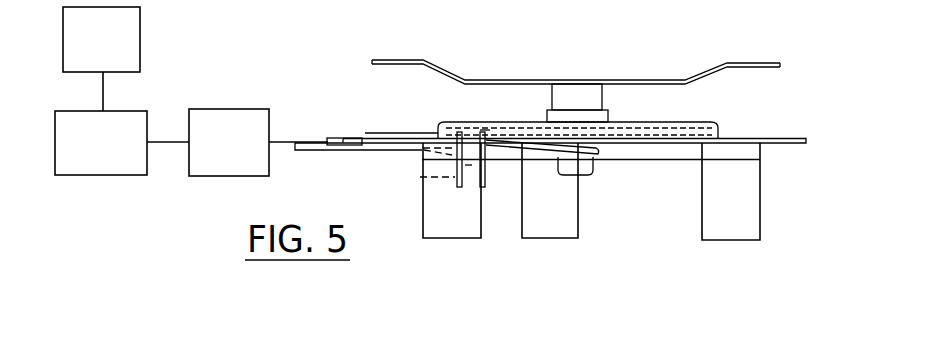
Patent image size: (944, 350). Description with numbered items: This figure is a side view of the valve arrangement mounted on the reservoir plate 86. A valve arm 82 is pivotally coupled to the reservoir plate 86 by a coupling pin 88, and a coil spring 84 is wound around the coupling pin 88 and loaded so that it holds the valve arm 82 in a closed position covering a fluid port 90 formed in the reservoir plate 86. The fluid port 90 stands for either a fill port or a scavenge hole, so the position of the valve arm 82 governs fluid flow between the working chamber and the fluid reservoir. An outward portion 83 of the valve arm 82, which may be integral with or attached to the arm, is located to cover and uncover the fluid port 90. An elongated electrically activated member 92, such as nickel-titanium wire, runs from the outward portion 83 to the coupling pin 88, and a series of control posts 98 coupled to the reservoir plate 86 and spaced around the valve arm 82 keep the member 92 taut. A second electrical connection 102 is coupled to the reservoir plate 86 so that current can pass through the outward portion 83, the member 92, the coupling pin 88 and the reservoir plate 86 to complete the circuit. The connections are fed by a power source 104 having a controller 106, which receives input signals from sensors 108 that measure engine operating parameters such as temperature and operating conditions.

The valve arm 82 is at (484, 178).
The outward portion 83 is at (420, 175).
The coil spring 84 is at (605, 150).
The reservoir plate 86 is at (755, 135).
The coupling pin 88 is at (603, 100).
The fluid port 90 is at (500, 122).
The electrically activated member 92 is at (662, 162).
The control posts 98 is at (452, 228).
The second electrical connection 102 is at (334, 138).
The power source 104 is at (232, 115).
The controller 106 is at (125, 117).
The sensors 108 is at (137, 20).